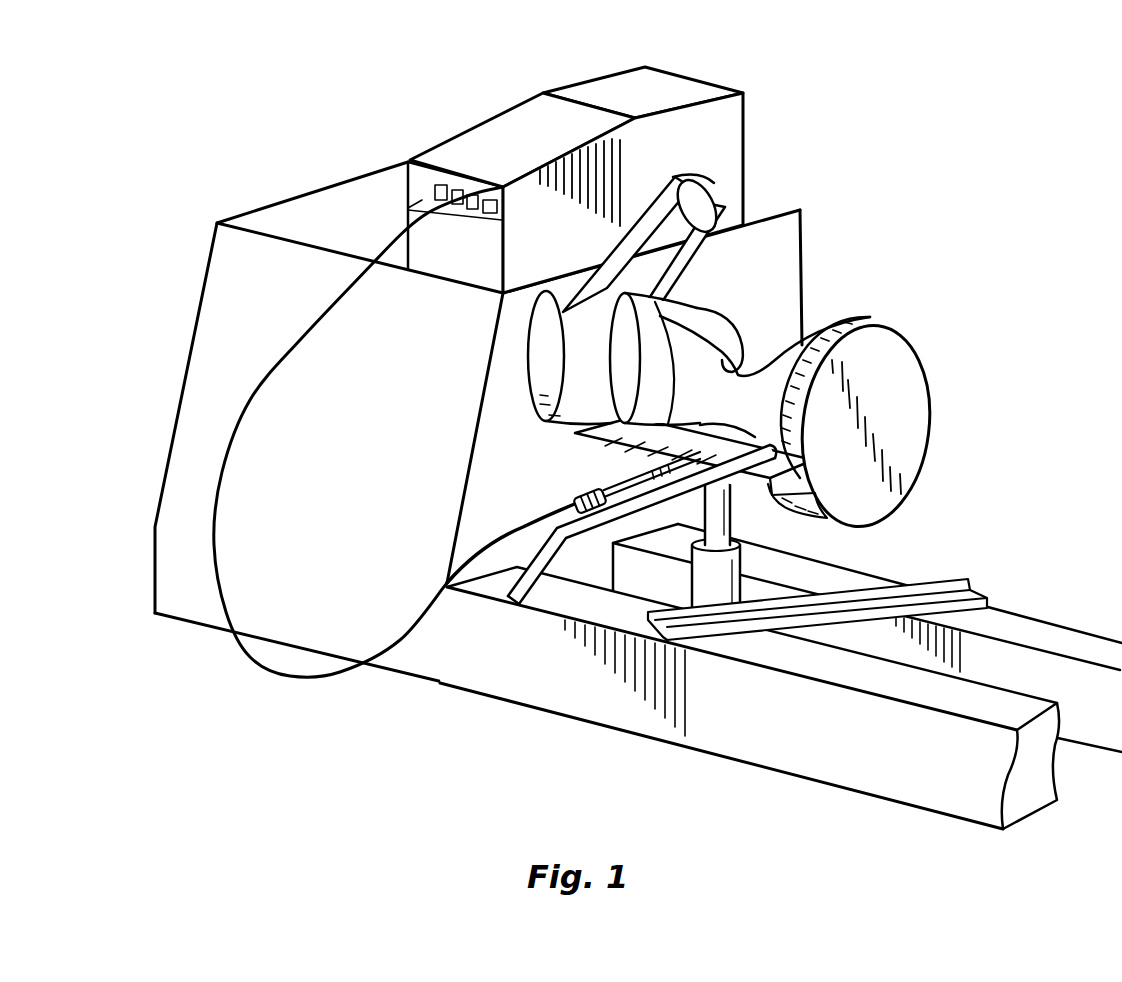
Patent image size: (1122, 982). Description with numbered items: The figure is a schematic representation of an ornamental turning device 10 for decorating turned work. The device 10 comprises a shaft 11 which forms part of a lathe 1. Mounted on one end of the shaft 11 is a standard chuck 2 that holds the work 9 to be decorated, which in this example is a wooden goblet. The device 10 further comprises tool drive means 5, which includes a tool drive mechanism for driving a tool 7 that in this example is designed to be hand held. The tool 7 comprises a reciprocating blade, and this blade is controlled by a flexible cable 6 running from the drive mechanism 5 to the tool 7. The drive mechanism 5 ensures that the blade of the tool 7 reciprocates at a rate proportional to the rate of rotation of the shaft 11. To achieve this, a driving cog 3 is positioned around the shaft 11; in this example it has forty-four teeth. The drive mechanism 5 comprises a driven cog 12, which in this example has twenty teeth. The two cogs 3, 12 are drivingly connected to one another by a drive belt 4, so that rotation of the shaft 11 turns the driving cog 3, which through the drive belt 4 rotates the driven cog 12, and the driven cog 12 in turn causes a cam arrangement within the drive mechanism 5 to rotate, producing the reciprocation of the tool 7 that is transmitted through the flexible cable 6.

The lathe 1 is at (852, 403).
The standard chuck 2 is at (700, 313).
The driving cog 3 is at (570, 303).
The drive belt 4 is at (607, 258).
The tool drive means 5 is at (693, 87).
The flexible cable 6 is at (250, 660).
The tool 7 is at (575, 512).
The work 9 is at (867, 313).
The ornamental turning device 10 is at (285, 203).
The shaft 11 is at (590, 408).
The driven cog 12 is at (700, 203).